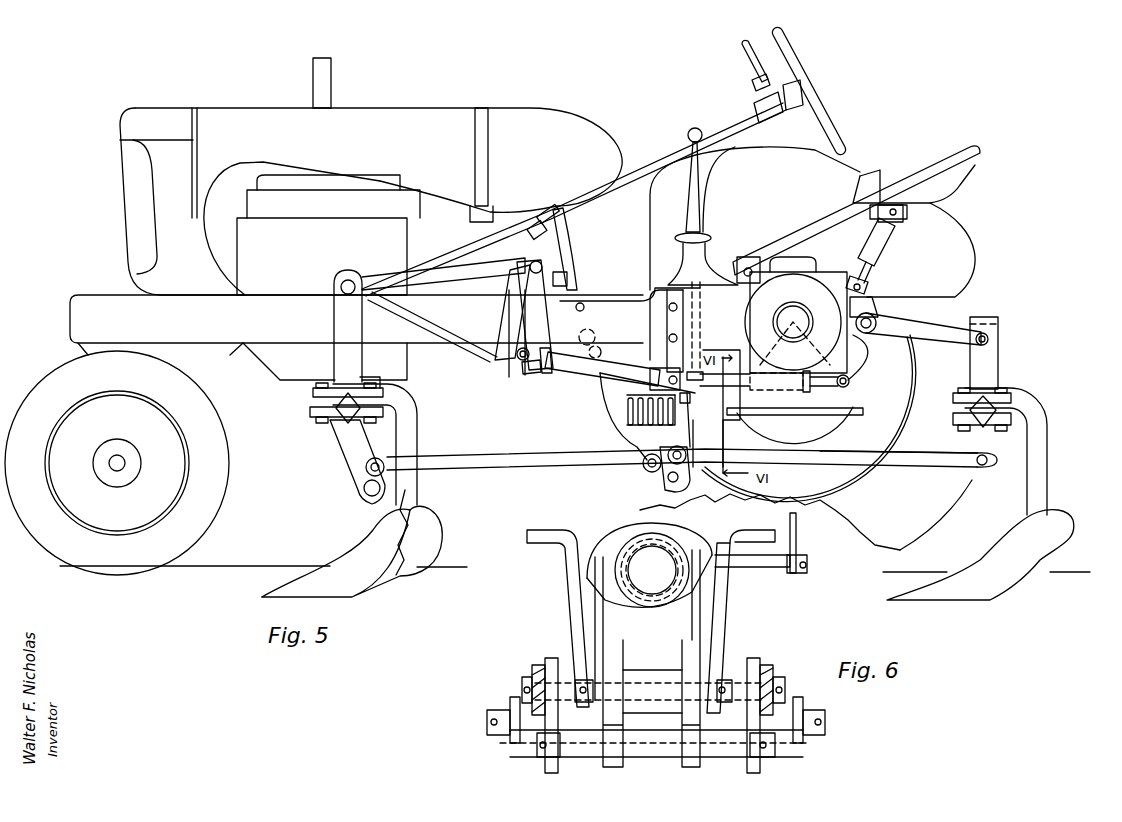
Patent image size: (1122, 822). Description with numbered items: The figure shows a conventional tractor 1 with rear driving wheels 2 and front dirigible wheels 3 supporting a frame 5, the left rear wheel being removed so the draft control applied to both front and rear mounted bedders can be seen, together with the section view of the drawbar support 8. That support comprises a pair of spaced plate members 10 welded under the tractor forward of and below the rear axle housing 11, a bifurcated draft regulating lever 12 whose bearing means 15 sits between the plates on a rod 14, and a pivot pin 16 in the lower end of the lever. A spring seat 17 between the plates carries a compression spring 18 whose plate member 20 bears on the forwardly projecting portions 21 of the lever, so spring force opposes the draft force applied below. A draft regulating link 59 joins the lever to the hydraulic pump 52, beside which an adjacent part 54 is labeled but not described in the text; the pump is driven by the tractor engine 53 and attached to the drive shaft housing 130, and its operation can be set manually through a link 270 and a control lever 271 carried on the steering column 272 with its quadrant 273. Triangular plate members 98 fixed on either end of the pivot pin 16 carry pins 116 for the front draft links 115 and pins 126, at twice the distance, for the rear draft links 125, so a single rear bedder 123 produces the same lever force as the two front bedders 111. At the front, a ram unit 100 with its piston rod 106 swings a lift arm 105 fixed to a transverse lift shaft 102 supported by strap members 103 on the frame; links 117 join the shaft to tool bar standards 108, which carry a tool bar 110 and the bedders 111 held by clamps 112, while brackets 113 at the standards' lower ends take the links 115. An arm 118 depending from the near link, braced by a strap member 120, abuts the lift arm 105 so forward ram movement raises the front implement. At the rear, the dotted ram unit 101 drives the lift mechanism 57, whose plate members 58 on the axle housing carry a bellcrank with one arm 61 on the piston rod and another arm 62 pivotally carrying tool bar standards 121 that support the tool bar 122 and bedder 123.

In FIG. 5, the tractor 1 is at (388, 141).
In FIG. 5, the rear driving wheels 2 is at (945, 345).
In FIG. 5, the front dirigible wheels 3 is at (167, 463).
In FIG. 5, the frame 5 is at (227, 343).
In FIG. 5, the drawbar support 8 is at (710, 408).
In FIG. 5, the plate members 10 is at (628, 438).
In FIG. 6, the plate members 10 is at (575, 590).
In FIG. 5, the rear axle housing 11 is at (820, 277).
In FIG. 5, the draft regulating lever 12 is at (697, 440).
In FIG. 6, the draft regulating lever 12 is at (615, 641).
In FIG. 6, the rod 14 is at (724, 680).
In FIG. 6, the bearing means 15 is at (651, 670).
In FIG. 5, the pivot pin 16 is at (678, 488).
In FIG. 6, the pivot pin 16 is at (642, 755).
In FIG. 5, the spring seat 17 is at (627, 407).
In FIG. 5, the compression spring 18 is at (627, 420).
In FIG. 5, the plate member 20 is at (651, 420).
In FIG. 6, the plate member 20 is at (682, 541).
In FIG. 5, the forwardly projecting portions 21 is at (700, 420).
In FIG. 5, the hydraulic pump 52 is at (572, 391).
In FIG. 5, the tractor engine 53 is at (302, 243).
In FIG. 5, the rod clamp 54 is at (567, 371).
In FIG. 5, the lift mechanism 57 is at (878, 323).
In FIG. 5, the plate members 58 is at (864, 307).
In FIG. 5, the draft regulating link 59 is at (645, 350).
In FIG. 6, the draft regulating link 59 is at (798, 540).
In FIG. 5, the arm 61 is at (858, 352).
In FIG. 5, the arm 62 is at (939, 333).
In FIG. 5, the triangular shaped plate members 98 is at (668, 480).
In FIG. 6, the triangular shaped plate members 98 is at (553, 658).
In FIG. 5, the ram unit 100 is at (625, 372).
In FIG. 5, the ram unit 101 is at (774, 388).
In FIG. 5, the lift shaft 102 is at (534, 258).
In FIG. 5, the strap members 103 is at (568, 272).
In FIG. 5, the lift arm 105 is at (535, 315).
In FIG. 5, the piston rod 106 is at (538, 374).
In FIG. 5, the tool bar standard 108 is at (334, 308).
In FIG. 5, the tool bar 110 is at (333, 422).
In FIG. 6, the tool bar 110 is at (722, 600).
In FIG. 5, the bedders 111 is at (368, 550).
In FIG. 5, the clamps 112 is at (313, 399).
In FIG. 5, the bracket 113 is at (372, 448).
In FIG. 5, the links 115 is at (520, 458).
In FIG. 6, the links 115 is at (512, 740).
In FIG. 5, the pins 116 is at (642, 463).
In FIG. 6, the pins 116 is at (490, 712).
In FIG. 5, the links 117 is at (380, 277).
In FIG. 5, the arm 118 is at (500, 312).
In FIG. 5, the strap member 120 is at (420, 312).
In FIG. 5, the tool bar standards 121 is at (997, 350).
In FIG. 5, the tool bar 122 is at (965, 428).
In FIG. 5, the bedder 123 is at (1067, 537).
In FIG. 5, the links 125 is at (870, 452).
In FIG. 6, the links 125 is at (536, 665).
In FIG. 5, the pins 126 is at (688, 456).
In FIG. 6, the pins 126 is at (523, 683).
In FIG. 5, the drive shaft housing 130 is at (523, 378).
In FIG. 5, the link 270 is at (565, 232).
In FIG. 5, the control lever 271 is at (746, 60).
In FIG. 5, the steering column 272 is at (662, 158).
In FIG. 5, the quadrant 273 is at (755, 96).